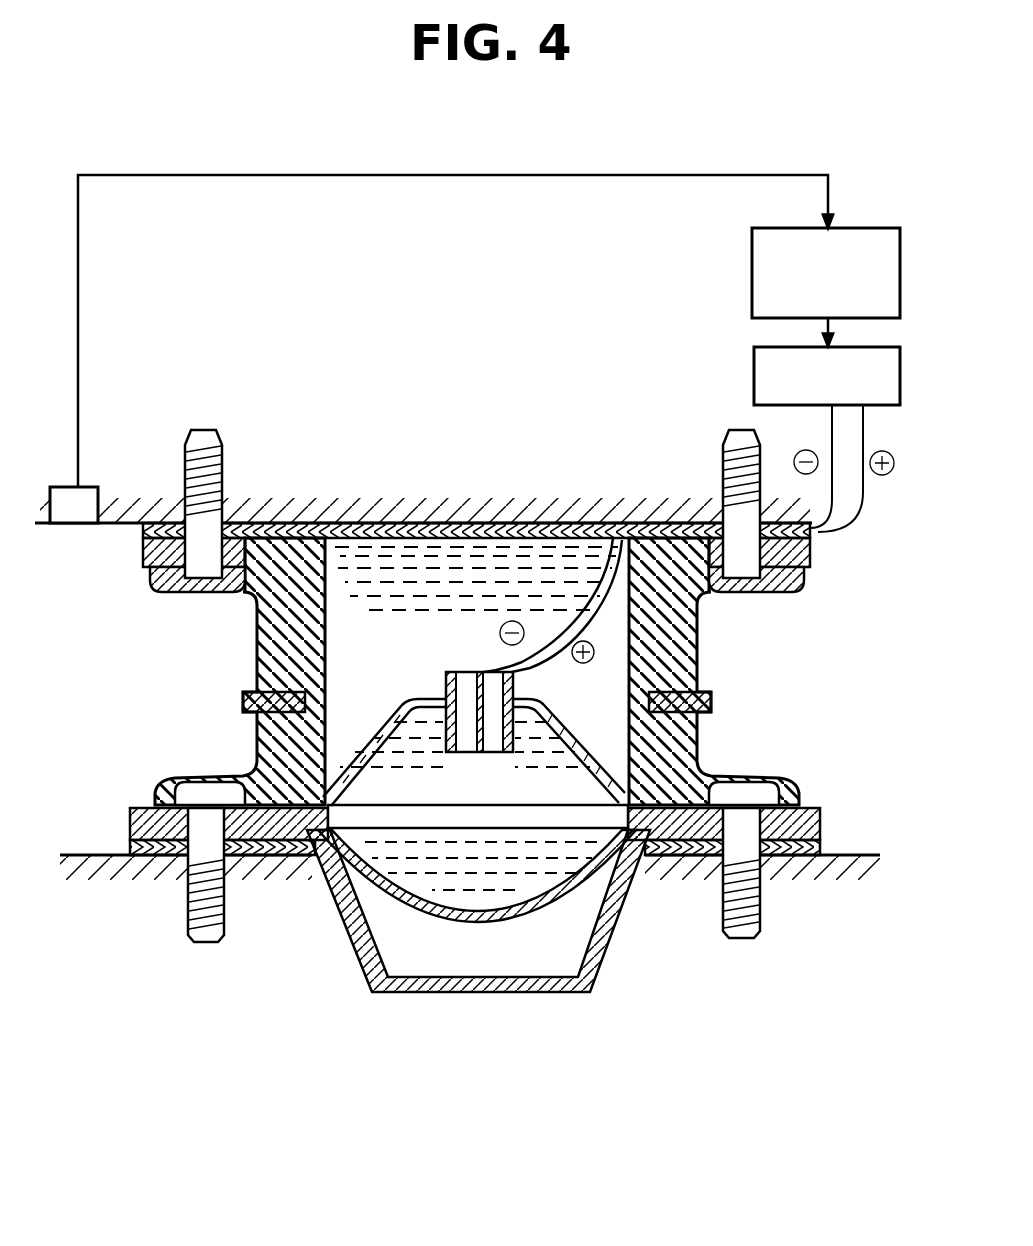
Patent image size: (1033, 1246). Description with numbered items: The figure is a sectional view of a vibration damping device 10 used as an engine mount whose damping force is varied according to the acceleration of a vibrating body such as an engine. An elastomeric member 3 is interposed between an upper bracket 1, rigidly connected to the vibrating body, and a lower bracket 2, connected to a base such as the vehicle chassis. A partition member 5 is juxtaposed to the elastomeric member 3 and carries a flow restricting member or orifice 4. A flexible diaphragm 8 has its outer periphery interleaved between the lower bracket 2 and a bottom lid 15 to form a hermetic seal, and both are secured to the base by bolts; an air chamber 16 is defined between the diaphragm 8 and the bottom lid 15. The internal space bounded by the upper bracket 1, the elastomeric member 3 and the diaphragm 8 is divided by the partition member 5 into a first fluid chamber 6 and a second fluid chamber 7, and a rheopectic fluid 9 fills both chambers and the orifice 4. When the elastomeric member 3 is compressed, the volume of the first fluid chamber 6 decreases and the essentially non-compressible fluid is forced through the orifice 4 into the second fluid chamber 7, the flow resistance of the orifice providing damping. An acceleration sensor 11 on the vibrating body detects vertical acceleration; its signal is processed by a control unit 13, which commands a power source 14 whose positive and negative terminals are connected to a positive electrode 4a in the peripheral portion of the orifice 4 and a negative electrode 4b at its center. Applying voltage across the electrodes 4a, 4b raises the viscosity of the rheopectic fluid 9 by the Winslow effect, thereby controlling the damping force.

The upper bracket 1 is at (302, 523).
The lower bracket 2 is at (130, 830).
The elastomeric member 3 is at (255, 640).
The flow restricting member 4 is at (459, 713).
The positive electrode 4a is at (453, 753).
The negative electrode 4b is at (480, 753).
The partition member 5 is at (375, 746).
The first fluid chamber 6 is at (447, 552).
The second fluid chamber 7 is at (577, 770).
The flexible diaphragm 8 is at (573, 897).
The rheopectic fluid 9 is at (570, 555).
The vibration damping device 10 is at (549, 444).
The acceleration sensor 11 is at (98, 486).
The control unit 13 is at (768, 228).
The power source 14 is at (752, 362).
The bottom lid 15 is at (526, 993).
The air chamber 16 is at (448, 950).